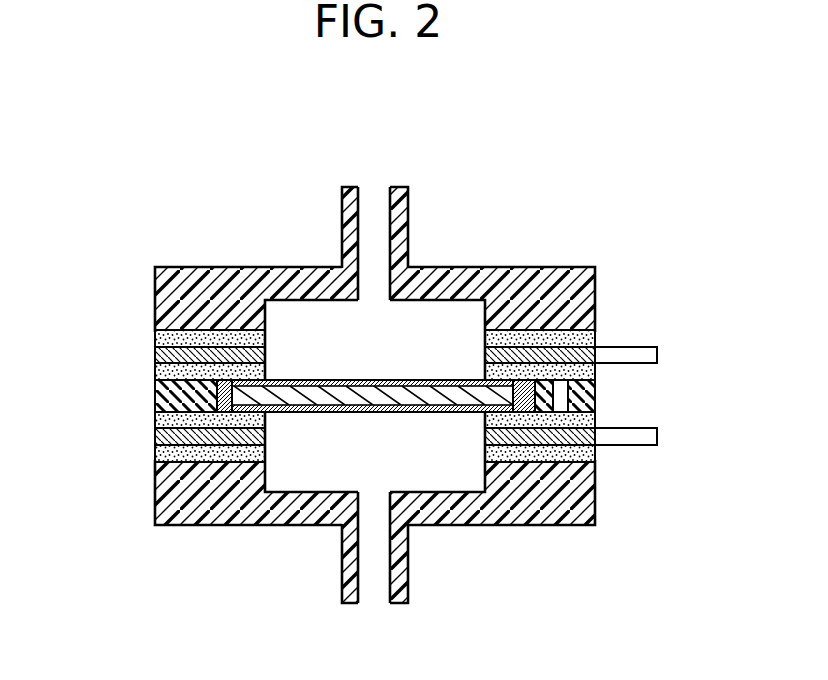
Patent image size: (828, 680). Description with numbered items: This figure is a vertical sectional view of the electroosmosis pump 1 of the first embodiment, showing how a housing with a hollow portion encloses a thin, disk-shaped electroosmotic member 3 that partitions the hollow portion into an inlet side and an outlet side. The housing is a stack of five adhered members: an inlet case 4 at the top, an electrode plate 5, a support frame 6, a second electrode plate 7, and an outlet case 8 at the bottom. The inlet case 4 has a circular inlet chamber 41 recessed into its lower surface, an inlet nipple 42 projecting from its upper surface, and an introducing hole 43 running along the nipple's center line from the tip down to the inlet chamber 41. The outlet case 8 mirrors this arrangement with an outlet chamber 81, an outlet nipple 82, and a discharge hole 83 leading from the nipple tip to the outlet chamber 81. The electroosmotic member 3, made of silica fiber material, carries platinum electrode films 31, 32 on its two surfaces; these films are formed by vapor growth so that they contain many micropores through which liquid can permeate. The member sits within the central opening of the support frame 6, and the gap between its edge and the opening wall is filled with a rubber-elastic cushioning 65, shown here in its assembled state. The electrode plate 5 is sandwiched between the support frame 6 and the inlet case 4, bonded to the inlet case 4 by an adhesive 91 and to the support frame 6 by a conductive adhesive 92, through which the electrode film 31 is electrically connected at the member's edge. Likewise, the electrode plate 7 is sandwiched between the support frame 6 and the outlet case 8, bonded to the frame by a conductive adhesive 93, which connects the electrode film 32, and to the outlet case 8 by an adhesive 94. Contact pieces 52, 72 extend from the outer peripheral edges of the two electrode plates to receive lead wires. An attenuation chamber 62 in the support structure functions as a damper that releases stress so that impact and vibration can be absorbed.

The electroosmosis pump 1 is at (588, 152).
The electroosmotic member 3 is at (367, 390).
The inlet case 4 is at (590, 288).
The electrode plate 5 is at (218, 372).
The support frame 6 is at (155, 405).
The electrode plate 7 is at (530, 438).
The outlet case 8 is at (584, 500).
The electrode film 31 is at (310, 380).
The electrode film 32 is at (288, 412).
The inlet chamber 41 is at (458, 323).
The inlet nipple 42 is at (402, 205).
The introducing hole 43 is at (375, 198).
The contact piece 52 is at (657, 353).
The attenuation chamber 62 is at (562, 398).
The cushioning 65 is at (158, 393).
The contact piece 72 is at (657, 436).
The outlet chamber 81 is at (456, 480).
The outlet nipple 82 is at (407, 575).
The discharge hole 83 is at (377, 582).
The adhesive 91 is at (160, 338).
The conductive adhesive 92 is at (160, 372).
The conductive adhesive 93 is at (160, 427).
The adhesive 94 is at (187, 460).